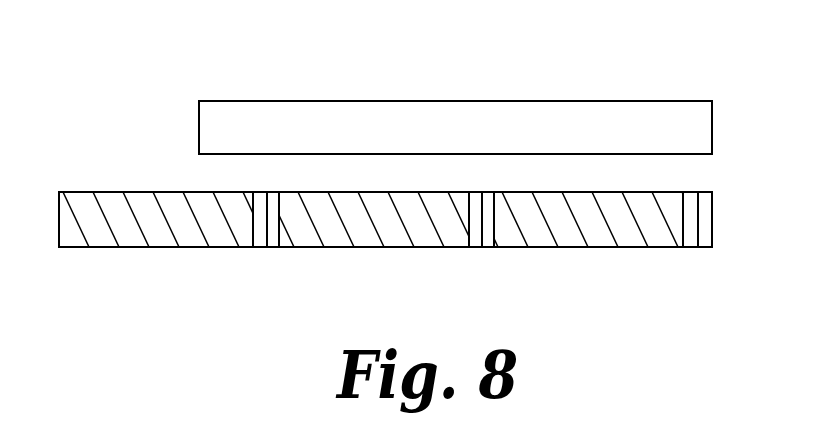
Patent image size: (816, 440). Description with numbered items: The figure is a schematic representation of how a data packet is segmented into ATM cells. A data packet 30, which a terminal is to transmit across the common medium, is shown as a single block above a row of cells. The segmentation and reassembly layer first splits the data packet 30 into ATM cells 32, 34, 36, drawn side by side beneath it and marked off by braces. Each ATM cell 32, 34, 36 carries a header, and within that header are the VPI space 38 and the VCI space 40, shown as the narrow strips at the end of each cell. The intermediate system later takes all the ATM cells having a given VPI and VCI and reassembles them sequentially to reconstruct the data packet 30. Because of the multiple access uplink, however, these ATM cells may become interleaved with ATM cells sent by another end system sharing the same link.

The data packet 30 is at (453, 127).
The ATM cell 32 is at (712, 257).
The ATM cell 34 is at (497, 257).
The ATM cell 36 is at (280, 257).
The VPI space 38 is at (273, 198).
The VCI space 40 is at (259, 198).